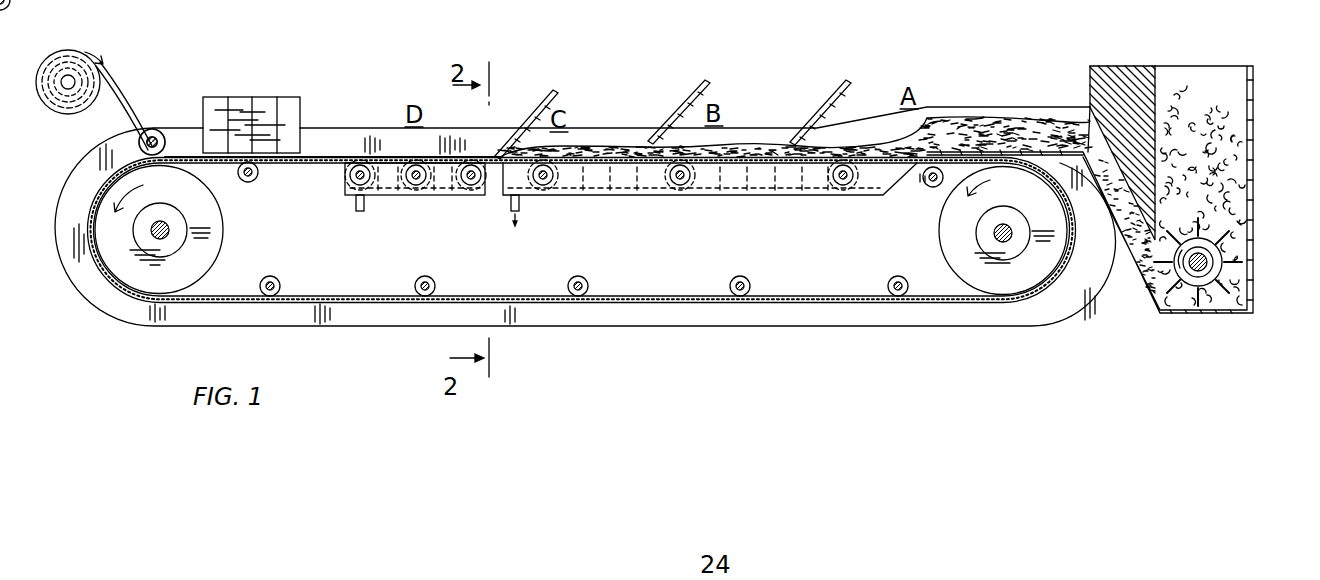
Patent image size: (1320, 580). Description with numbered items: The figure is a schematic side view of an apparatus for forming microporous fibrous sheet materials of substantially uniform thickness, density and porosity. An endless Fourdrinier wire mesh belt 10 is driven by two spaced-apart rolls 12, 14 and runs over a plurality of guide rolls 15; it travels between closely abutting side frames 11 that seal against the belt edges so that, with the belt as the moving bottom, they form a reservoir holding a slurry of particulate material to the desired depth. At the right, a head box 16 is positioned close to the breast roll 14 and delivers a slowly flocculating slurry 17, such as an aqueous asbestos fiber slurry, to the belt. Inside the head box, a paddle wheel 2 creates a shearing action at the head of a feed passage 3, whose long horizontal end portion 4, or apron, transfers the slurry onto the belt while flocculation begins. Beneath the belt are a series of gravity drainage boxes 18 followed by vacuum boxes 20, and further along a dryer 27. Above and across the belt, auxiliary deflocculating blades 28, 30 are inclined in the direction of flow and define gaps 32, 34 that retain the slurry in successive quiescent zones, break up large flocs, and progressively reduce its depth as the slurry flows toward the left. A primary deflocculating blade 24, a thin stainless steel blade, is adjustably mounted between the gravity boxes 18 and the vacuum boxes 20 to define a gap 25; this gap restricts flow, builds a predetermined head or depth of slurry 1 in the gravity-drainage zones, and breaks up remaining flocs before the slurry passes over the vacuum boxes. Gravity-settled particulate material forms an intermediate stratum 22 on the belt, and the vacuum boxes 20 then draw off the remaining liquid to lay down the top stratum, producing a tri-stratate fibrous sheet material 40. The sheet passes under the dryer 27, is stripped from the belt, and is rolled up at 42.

The slurry 1 is at (779, 163).
The paddle wheel 2 is at (1215, 262).
The feed passage 3 is at (1142, 248).
The horizontal end portion 4 is at (1010, 125).
The Fourdrinier wire mesh belt 10 is at (795, 304).
The side frames 11 is at (387, 128).
The roll 12 is at (120, 270).
The roll 14 is at (1020, 296).
The guide rolls 15 is at (152, 130).
The head box 16 is at (1253, 77).
The slurry 17 is at (1200, 96).
The gravity drainage boxes 18 is at (658, 201).
The vacuum boxes 20 is at (470, 197).
The intermediate stratum 22 is at (588, 145).
The primary deflocculating blade 24 is at (550, 96).
The gap 25 is at (497, 157).
The dryer 27 is at (268, 100).
The auxiliary deflocculating blade 28 is at (838, 92).
The auxiliary deflocculating blade 30 is at (695, 92).
The gap 32 is at (790, 146).
The gap 34 is at (640, 146).
The tri-stratate fibrous sheet material 40 is at (310, 157).
The roll-up 42 is at (66, 55).